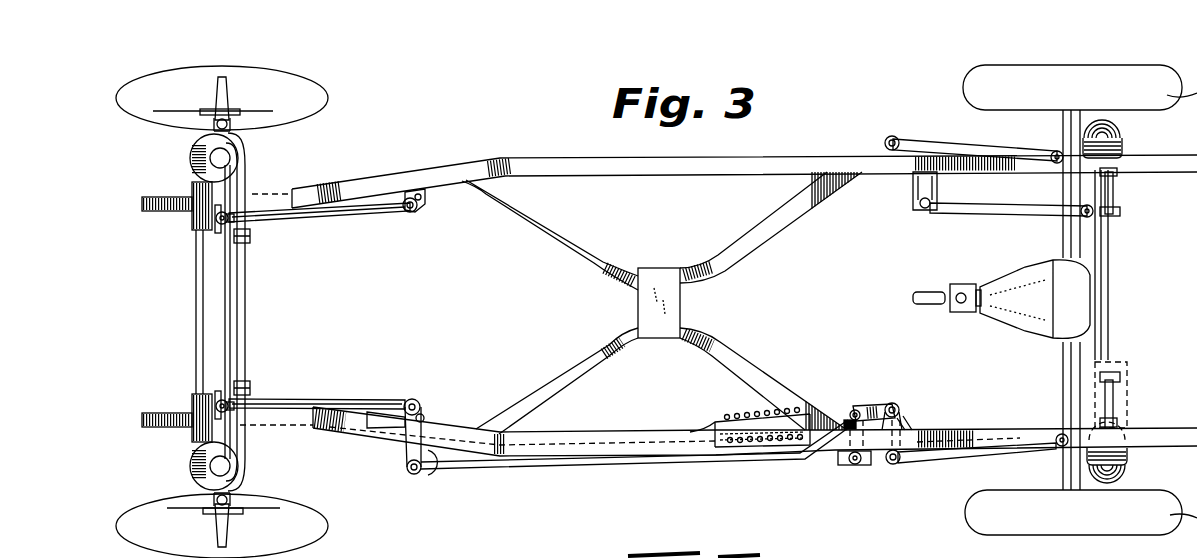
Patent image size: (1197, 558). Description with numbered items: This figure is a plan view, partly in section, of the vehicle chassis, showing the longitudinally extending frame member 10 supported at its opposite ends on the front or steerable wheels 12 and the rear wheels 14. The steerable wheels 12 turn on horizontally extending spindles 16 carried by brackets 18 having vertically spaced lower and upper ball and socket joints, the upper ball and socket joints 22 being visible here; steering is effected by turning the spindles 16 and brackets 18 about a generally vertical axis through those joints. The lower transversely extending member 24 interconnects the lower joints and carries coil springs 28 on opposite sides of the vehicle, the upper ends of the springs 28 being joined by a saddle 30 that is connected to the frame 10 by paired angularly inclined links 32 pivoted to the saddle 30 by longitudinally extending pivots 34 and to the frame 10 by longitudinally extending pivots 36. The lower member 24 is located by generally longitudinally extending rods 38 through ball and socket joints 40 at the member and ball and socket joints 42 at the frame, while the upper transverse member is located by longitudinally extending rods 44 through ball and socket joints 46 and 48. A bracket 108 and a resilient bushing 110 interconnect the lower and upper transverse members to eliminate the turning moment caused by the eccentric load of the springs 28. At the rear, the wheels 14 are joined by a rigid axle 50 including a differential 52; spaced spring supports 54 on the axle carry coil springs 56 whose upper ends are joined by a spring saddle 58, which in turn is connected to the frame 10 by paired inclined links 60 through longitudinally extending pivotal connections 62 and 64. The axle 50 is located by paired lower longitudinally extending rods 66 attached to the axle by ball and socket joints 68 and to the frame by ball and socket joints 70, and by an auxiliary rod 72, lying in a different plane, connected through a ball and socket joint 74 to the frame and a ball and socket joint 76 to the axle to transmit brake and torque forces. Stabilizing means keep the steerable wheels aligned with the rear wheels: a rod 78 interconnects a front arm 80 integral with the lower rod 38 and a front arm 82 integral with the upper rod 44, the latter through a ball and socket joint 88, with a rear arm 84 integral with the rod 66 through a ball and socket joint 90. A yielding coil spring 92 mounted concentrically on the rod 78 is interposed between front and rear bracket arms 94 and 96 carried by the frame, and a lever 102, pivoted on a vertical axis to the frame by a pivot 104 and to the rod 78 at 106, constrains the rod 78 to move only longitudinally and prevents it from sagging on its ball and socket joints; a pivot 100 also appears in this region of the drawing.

The frame member 10 is at (698, 163).
The front or steerable wheels 12 is at (300, 85).
The rear wheels 14 is at (1080, 311).
The spindles 16 is at (229, 90).
The brackets 18 is at (203, 109).
The upper ball and socket joints 22 is at (228, 124).
The lower transversely extending member 24 is at (238, 178).
The coil springs 28 is at (238, 150).
The saddle 30 is at (190, 165).
The angularly inclined links 32 is at (205, 215).
The longitudinally extending pivots 34 is at (191, 190).
The longitudinally extending pivots 36 is at (216, 229).
The longitudinally extending rods 38 is at (282, 197).
The ball and socket joints 40 is at (228, 212).
The ball and socket joints 42 is at (421, 200).
The longitudinally extending rods 44 is at (361, 214).
The ball and socket joints 46 is at (222, 220).
The ball and socket joints 48 is at (410, 213).
The rigid axle 50 is at (1070, 365).
The differential 52 is at (1036, 313).
The spring supports 54 is at (1119, 128).
The coil springs 56 is at (1123, 138).
The spring saddle 58 is at (1082, 145).
The angularly inclined links 60 is at (1120, 200).
The longitudinally extending pivotal connections 62 is at (1120, 174).
The longitudinally extending pivotal connections 64 is at (1123, 214).
The lower longitudinally extending rods 66 is at (957, 140).
The ball and socket joints 68 is at (1052, 162).
The ball and socket joints 70 is at (897, 133).
The auxiliary rod 72 is at (975, 211).
The ball and socket joint 74 is at (922, 208).
The ball and socket joint 76 is at (1083, 217).
The rod 78 is at (487, 460).
The arm 80 is at (441, 470).
The arm 82 is at (403, 452).
The arm 84 is at (899, 426).
The ball and socket joint 88 is at (415, 475).
The ball and socket joint 90 is at (900, 410).
The coil spring 92 is at (737, 414).
The front bracket arm 94 is at (725, 419).
The rear bracket arm 96 is at (802, 410).
The lever pivot 100 is at (850, 411).
The lever 102 is at (876, 409).
The pivot 104 is at (857, 466).
The pivotal connection 106 is at (846, 431).
The bracket 108 is at (251, 238).
The resilient bushing 110 is at (249, 242).